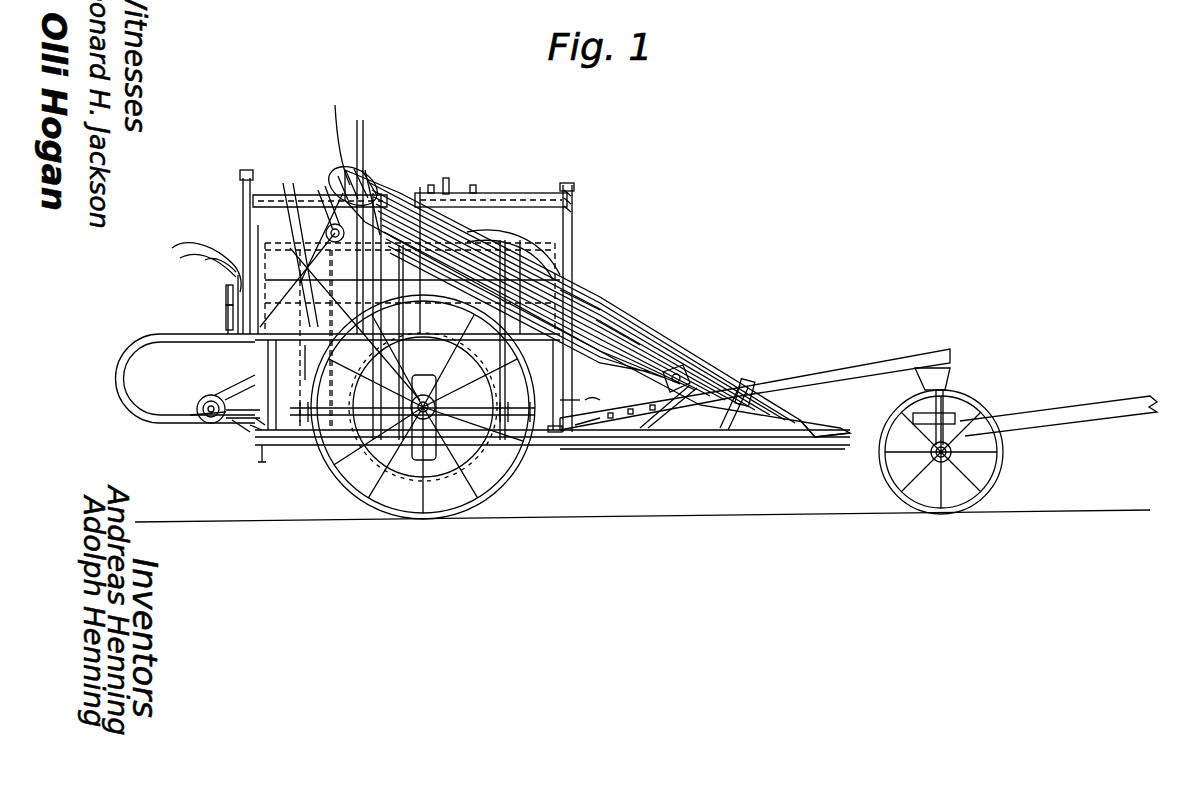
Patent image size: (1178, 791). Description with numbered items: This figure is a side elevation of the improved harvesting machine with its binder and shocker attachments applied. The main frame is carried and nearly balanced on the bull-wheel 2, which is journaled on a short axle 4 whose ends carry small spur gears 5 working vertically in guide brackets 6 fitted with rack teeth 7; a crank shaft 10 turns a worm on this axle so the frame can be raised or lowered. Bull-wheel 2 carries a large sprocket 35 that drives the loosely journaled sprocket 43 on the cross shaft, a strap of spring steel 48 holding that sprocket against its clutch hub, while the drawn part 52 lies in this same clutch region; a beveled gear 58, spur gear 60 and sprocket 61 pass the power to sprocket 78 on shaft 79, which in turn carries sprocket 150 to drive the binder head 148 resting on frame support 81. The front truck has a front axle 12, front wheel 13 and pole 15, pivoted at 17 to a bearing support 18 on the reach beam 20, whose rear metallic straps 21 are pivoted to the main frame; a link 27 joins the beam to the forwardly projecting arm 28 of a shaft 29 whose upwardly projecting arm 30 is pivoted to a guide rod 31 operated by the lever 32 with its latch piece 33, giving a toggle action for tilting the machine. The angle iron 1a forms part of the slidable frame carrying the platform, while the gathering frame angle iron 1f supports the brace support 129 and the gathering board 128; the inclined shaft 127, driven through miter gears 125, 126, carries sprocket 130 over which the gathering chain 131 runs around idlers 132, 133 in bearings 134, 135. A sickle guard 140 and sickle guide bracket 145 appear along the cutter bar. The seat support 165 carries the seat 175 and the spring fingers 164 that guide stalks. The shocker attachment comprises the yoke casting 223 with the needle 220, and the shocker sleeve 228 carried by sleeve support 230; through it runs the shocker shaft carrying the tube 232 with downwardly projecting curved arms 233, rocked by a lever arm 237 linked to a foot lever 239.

The angle iron 1a is at (296, 447).
The gathering frame angle iron 1f is at (755, 447).
The bull-wheel 2 is at (345, 490).
The short axle 4 is at (423, 410).
The small spur gear 5 is at (412, 400).
The guide bracket 6 is at (441, 407).
The rack teeth 7 is at (385, 316).
The crank shaft 10 is at (404, 311).
The front axle 12 is at (955, 448).
The front wheel 13 is at (1000, 483).
The pole 15 is at (1120, 400).
The pivot 17 is at (912, 418).
The bearing support 18 is at (942, 385).
The reach beam 20 is at (905, 355).
The metallic strap 21 is at (622, 425).
The link 27 is at (638, 355).
The forwardly projecting arm 28 is at (602, 330).
The shaft 29 is at (589, 381).
The upwardly projecting arm 30 is at (583, 300).
The guide rod 31 is at (462, 245).
The lever 32 is at (318, 200).
The latch piece 33 is at (306, 296).
The large sprocket 35 is at (495, 488).
The sprocket 43 is at (200, 406).
The strap of spring steel 48 is at (220, 427).
The link 52 is at (195, 410).
The beveled gear 58 is at (217, 406).
The spur gear 60 is at (246, 457).
The sprocket 61 is at (227, 437).
The sprocket 78 is at (226, 316).
The shaft 79 is at (226, 290).
The frame support 81 is at (580, 400).
The miter gear 125 is at (233, 430).
The miter gear 126 is at (243, 430).
The inclined shaft 127 is at (333, 160).
The gathering board 128 is at (412, 193).
The brace support 129 is at (377, 183).
The sprocket 130 is at (367, 170).
The gathering chain 131 is at (495, 250).
The idler 132 is at (672, 425).
The idler 133 is at (727, 432).
The bearing 134 is at (690, 372).
The bearing 135 is at (745, 395).
The guard 140 is at (585, 435).
The sickle guide bracket 145 is at (560, 436).
The binder head 148 is at (480, 190).
The sprocket 150 is at (242, 258).
The spring finger 164 is at (576, 262).
The seat support 165 is at (124, 380).
The seat 175 is at (175, 252).
The needle 220 is at (360, 120).
The yoke casting 223 is at (260, 225).
The shocker sleeve 228 is at (284, 185).
The sleeve support 230 is at (574, 238).
The tube 232 is at (262, 225).
The curved arm 233 is at (258, 235).
The lever arm 237 is at (330, 193).
The foot lever 239 is at (312, 362).